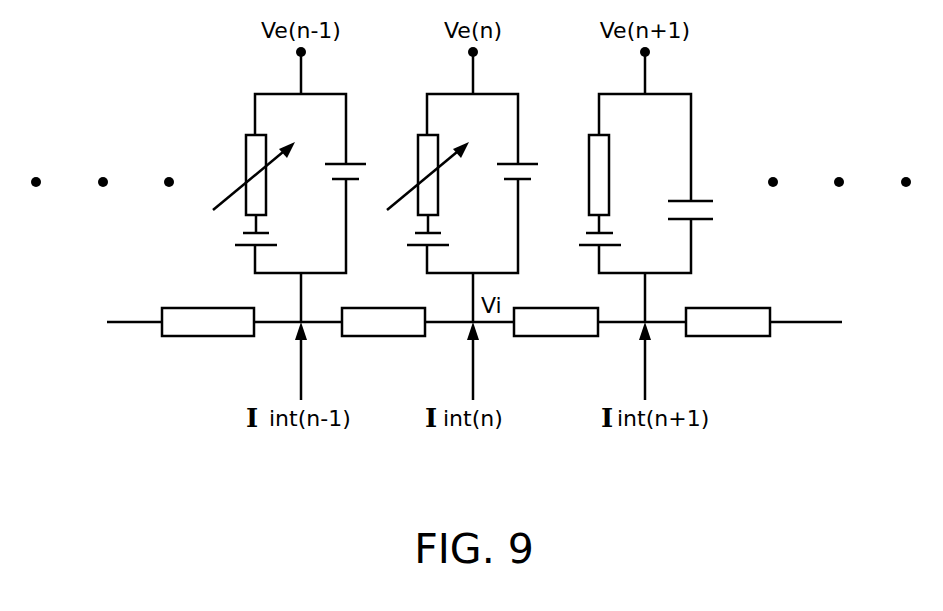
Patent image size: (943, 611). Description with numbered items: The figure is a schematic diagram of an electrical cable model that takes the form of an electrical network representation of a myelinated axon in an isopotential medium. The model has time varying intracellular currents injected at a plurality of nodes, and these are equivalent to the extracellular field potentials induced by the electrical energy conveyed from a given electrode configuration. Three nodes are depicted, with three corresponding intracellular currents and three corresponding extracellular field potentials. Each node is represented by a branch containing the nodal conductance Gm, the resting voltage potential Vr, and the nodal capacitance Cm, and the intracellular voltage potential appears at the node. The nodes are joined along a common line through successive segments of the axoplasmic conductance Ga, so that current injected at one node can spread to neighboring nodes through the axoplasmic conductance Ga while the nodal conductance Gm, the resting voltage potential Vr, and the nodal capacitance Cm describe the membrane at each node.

The axoplasmic conductance Ga is at (466, 309).
The nodal conductance Gm is at (436, 175).
The nodal capacitance Cm is at (530, 157).
The resting voltage potential Vr is at (412, 236).